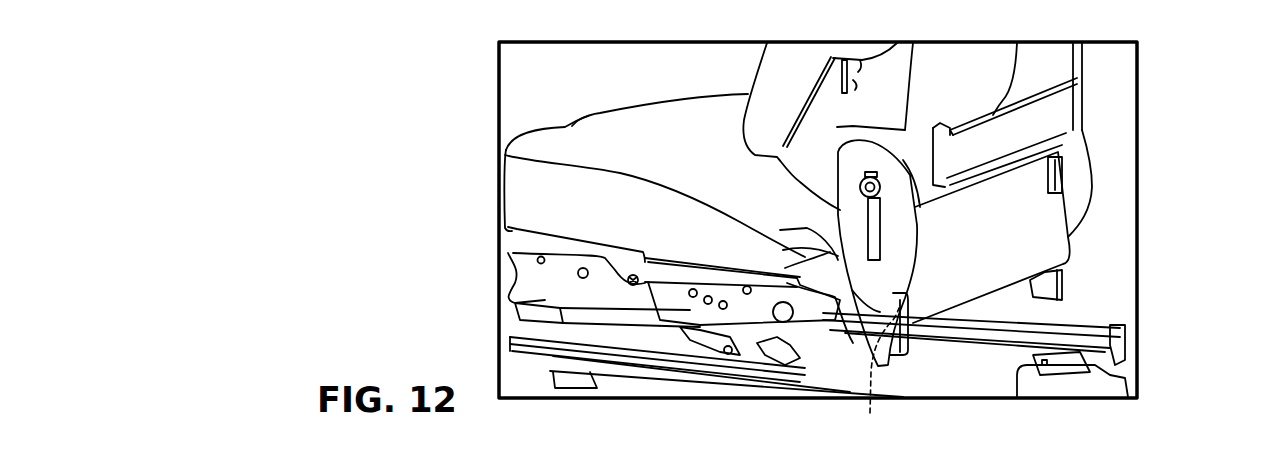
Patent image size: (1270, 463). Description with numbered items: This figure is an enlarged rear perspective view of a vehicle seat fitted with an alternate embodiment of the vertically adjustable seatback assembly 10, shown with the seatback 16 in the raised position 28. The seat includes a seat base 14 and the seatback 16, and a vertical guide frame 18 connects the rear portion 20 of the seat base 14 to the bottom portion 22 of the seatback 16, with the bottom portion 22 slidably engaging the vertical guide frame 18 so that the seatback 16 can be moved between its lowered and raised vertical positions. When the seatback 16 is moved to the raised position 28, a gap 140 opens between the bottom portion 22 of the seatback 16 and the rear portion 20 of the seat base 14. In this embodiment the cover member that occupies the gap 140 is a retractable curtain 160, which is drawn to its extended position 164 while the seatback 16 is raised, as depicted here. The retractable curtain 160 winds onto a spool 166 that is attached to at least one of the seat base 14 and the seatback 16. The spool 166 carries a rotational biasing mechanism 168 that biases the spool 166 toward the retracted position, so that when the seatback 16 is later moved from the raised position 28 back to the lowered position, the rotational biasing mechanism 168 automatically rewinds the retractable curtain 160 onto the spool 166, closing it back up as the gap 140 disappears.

The vertically adjustable seatback assembly 10 is at (478, 92).
The seat base 14 is at (538, 205).
The seatback 16 is at (802, 65).
The vertical guide frame 18 is at (824, 302).
The rear portion 20 is at (790, 233).
The bottom portion 22 is at (872, 302).
The raised position 28 is at (836, 161).
The gap 140 is at (997, 186).
The retractable curtain 160 is at (1040, 273).
The extended position 164 is at (1064, 193).
The spool 166 is at (1018, 266).
The rotational biasing mechanism 168 is at (877, 372).